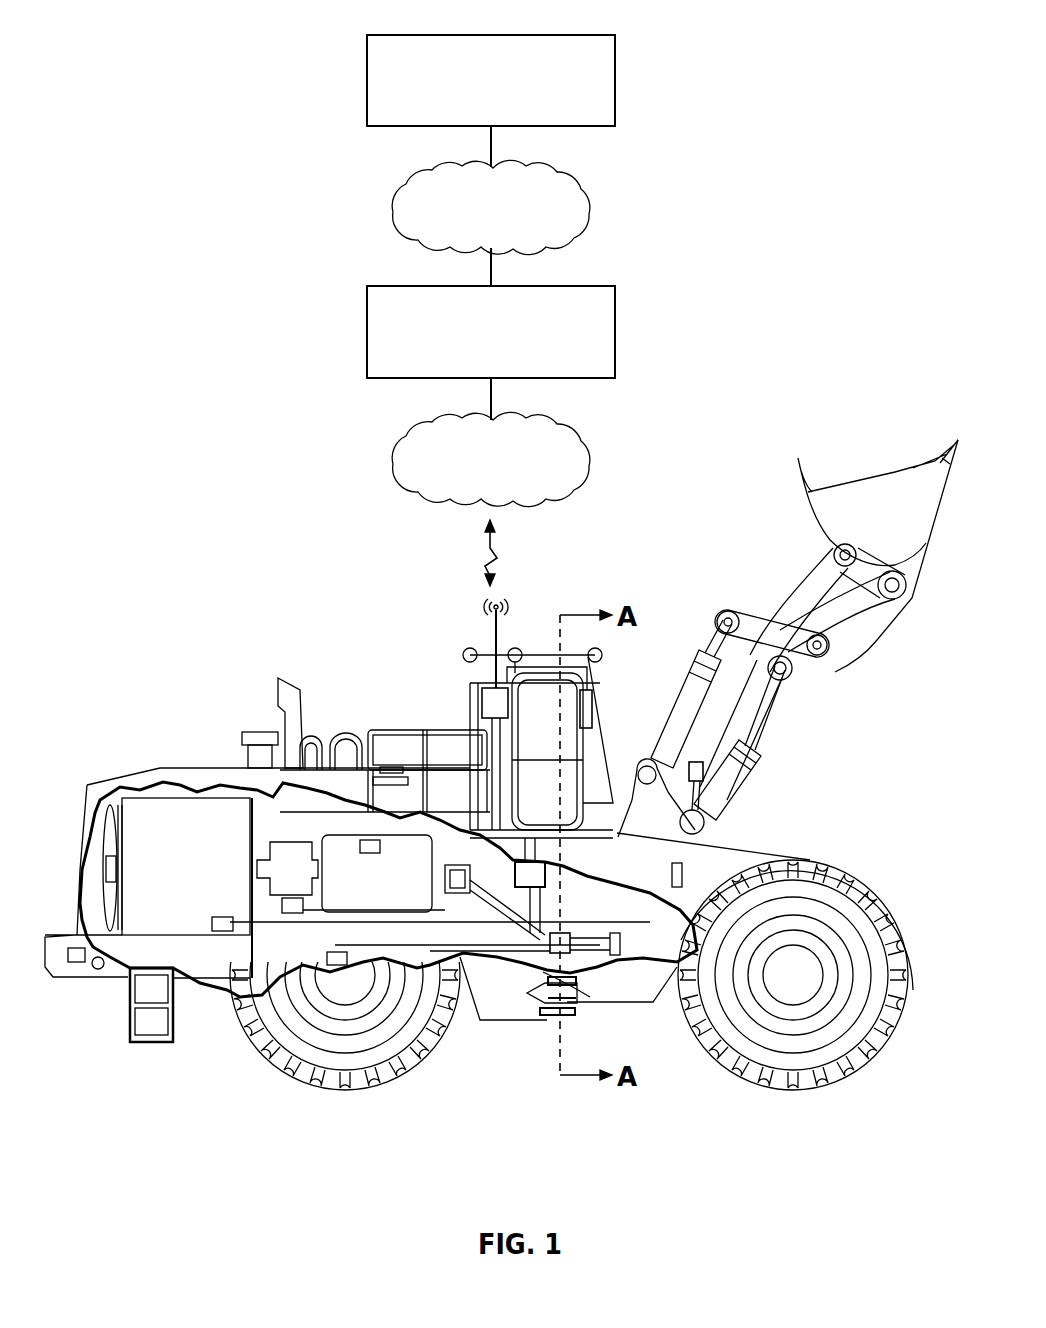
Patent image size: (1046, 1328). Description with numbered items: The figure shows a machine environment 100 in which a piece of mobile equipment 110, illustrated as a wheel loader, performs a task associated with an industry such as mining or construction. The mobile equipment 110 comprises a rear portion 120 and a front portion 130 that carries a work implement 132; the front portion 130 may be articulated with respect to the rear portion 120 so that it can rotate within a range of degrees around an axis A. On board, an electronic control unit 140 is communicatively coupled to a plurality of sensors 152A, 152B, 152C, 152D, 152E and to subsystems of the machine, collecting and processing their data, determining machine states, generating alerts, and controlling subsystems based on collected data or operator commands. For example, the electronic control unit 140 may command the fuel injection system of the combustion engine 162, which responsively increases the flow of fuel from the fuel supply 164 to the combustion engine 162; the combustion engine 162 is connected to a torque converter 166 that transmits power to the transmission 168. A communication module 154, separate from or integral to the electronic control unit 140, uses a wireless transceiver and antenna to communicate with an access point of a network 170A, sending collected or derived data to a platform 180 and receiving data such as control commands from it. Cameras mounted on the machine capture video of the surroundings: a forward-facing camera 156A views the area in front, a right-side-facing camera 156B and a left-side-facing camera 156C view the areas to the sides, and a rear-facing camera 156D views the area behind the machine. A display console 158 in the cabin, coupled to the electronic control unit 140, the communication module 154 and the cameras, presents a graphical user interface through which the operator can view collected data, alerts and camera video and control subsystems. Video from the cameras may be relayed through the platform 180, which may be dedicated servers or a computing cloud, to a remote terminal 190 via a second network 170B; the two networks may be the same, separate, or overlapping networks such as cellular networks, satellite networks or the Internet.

The machine environment 100 is at (796, 115).
The mobile equipment 110 is at (840, 830).
The rear portion 120 is at (555, 1150).
The front portion 130 is at (960, 1150).
The work implement 132 is at (902, 529).
The electronic control unit 140 is at (506, 938).
The sensor 152A is at (370, 840).
The sensor 152B is at (212, 924).
The sensor 152C is at (742, 856).
The sensor 152D is at (337, 966).
The sensor 152E is at (283, 900).
The communication module 154 is at (482, 700).
The forward-facing camera 156A is at (602, 652).
The right-side-facing camera 156B is at (515, 655).
The left-side-facing camera 156C is at (516, 647).
The rear-facing camera 156D is at (470, 647).
The display console 158 is at (592, 710).
The combustion engine 162 is at (207, 853).
The fuel supply 164 is at (233, 953).
The torque converter 166 is at (285, 845).
The transmission 168 is at (393, 896).
The network 170A is at (590, 460).
The network 170B is at (590, 208).
The platform 180 is at (440, 285).
The remote terminal 190 is at (440, 34).